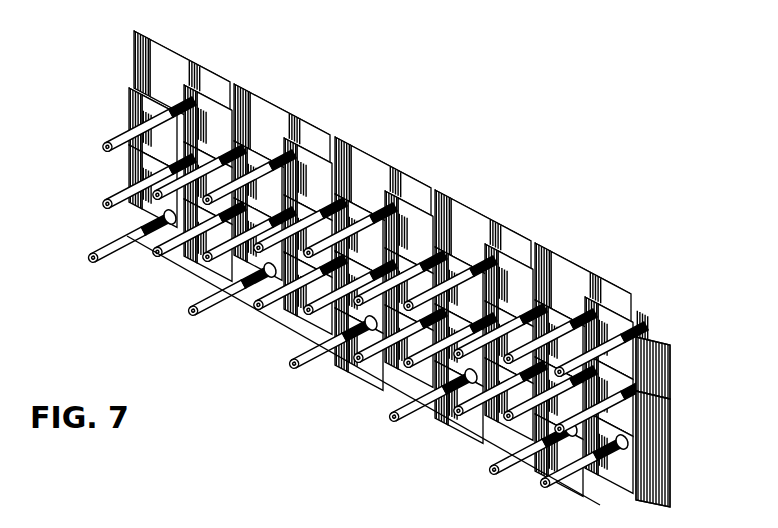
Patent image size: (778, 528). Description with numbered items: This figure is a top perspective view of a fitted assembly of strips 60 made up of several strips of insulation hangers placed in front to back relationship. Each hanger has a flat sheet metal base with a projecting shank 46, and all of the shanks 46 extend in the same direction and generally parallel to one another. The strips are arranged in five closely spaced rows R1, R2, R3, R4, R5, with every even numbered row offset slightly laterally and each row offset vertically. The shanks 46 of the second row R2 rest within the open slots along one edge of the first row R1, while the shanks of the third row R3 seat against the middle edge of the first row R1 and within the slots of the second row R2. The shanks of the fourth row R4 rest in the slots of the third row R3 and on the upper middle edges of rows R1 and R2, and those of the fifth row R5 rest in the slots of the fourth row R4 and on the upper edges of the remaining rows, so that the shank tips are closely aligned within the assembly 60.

The fitted assembly of strips 60 is at (276, 349).
The shank 46 is at (400, 417).
The first row R1 is at (623, 478).
The second row R2 is at (668, 433).
The third row R3 is at (618, 342).
The fourth row R4 is at (668, 338).
The fifth row R5 is at (579, 277).